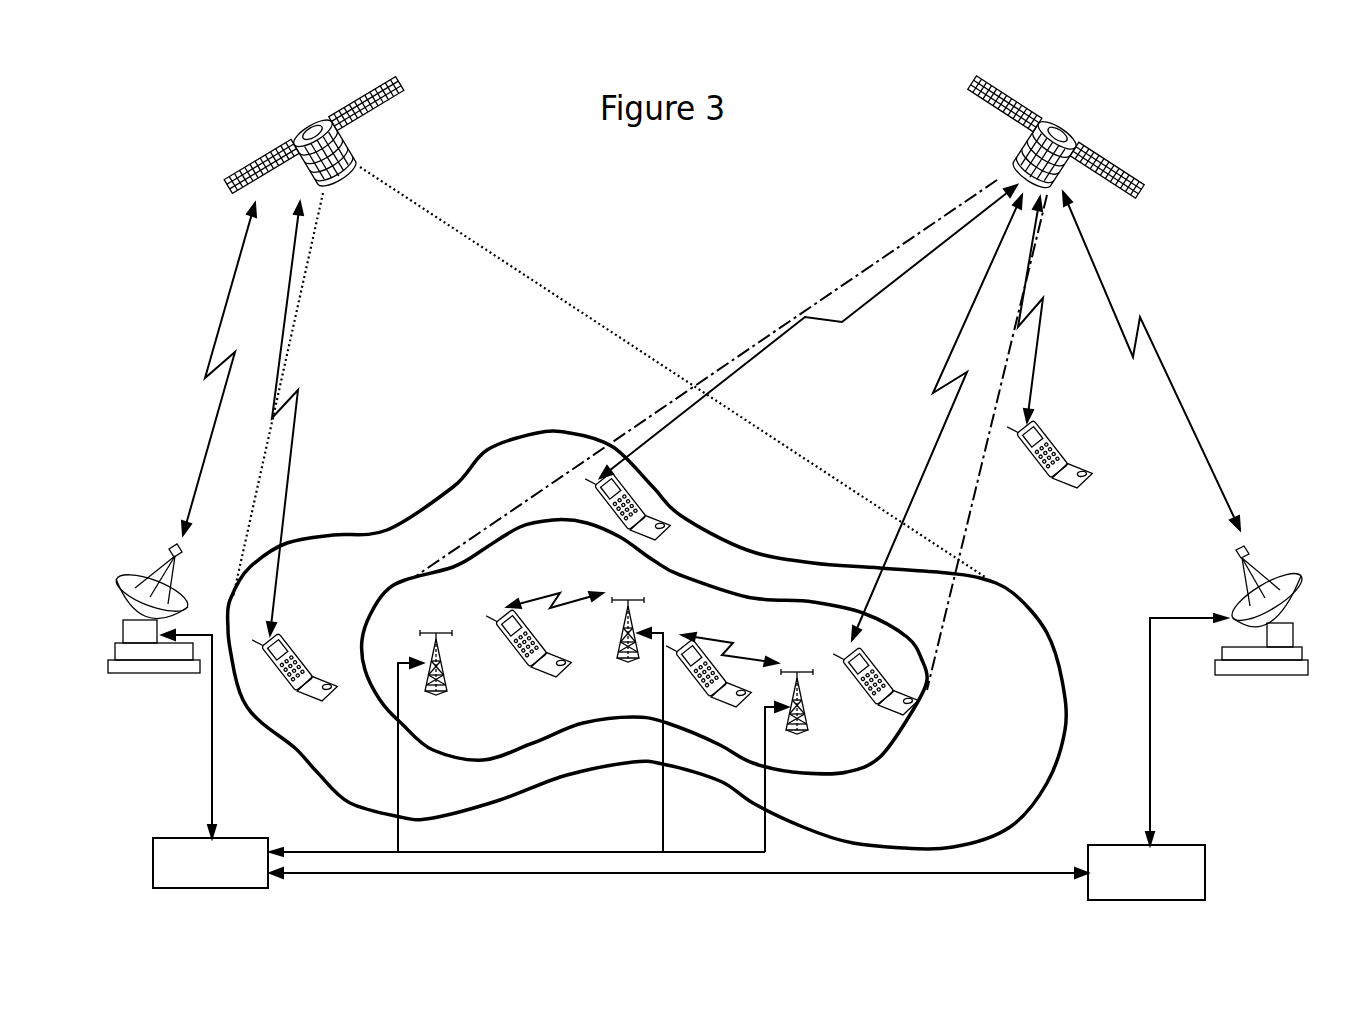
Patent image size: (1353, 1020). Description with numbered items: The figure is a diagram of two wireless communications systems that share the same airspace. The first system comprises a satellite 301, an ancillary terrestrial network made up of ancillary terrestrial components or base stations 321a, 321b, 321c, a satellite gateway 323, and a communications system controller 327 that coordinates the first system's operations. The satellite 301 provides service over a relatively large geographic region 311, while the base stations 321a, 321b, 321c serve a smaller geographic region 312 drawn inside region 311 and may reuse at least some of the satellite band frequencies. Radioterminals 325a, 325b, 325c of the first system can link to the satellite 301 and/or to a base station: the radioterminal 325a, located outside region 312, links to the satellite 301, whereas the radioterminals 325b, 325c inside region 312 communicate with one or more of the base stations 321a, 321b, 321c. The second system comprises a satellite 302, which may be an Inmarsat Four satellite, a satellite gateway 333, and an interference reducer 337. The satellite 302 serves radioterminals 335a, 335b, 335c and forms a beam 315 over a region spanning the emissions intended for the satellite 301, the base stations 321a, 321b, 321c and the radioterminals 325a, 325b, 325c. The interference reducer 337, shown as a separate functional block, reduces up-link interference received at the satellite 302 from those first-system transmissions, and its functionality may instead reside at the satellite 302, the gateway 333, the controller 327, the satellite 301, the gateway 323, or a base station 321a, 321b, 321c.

The satellite 301 is at (347, 137).
The satellite 302 is at (1027, 140).
The beam 315 is at (905, 243).
The satellite gateway 323 is at (130, 575).
The satellite gateway 333 is at (1267, 677).
The communications system controller 327 is at (182, 838).
The interference reducer 337 is at (1173, 845).
The geographic region 311 is at (1068, 732).
The geographic region 312 is at (880, 757).
The ancillary terrestrial component 321a is at (447, 658).
The ancillary terrestrial component 321b is at (610, 628).
The ancillary terrestrial component 321c is at (807, 713).
The radioterminal 325a is at (290, 683).
The radioterminal 325b is at (537, 667).
The radioterminal 325c is at (693, 673).
The radioterminal 335a is at (857, 673).
The radioterminal 335b is at (1030, 460).
The radioterminal 335c is at (608, 497).